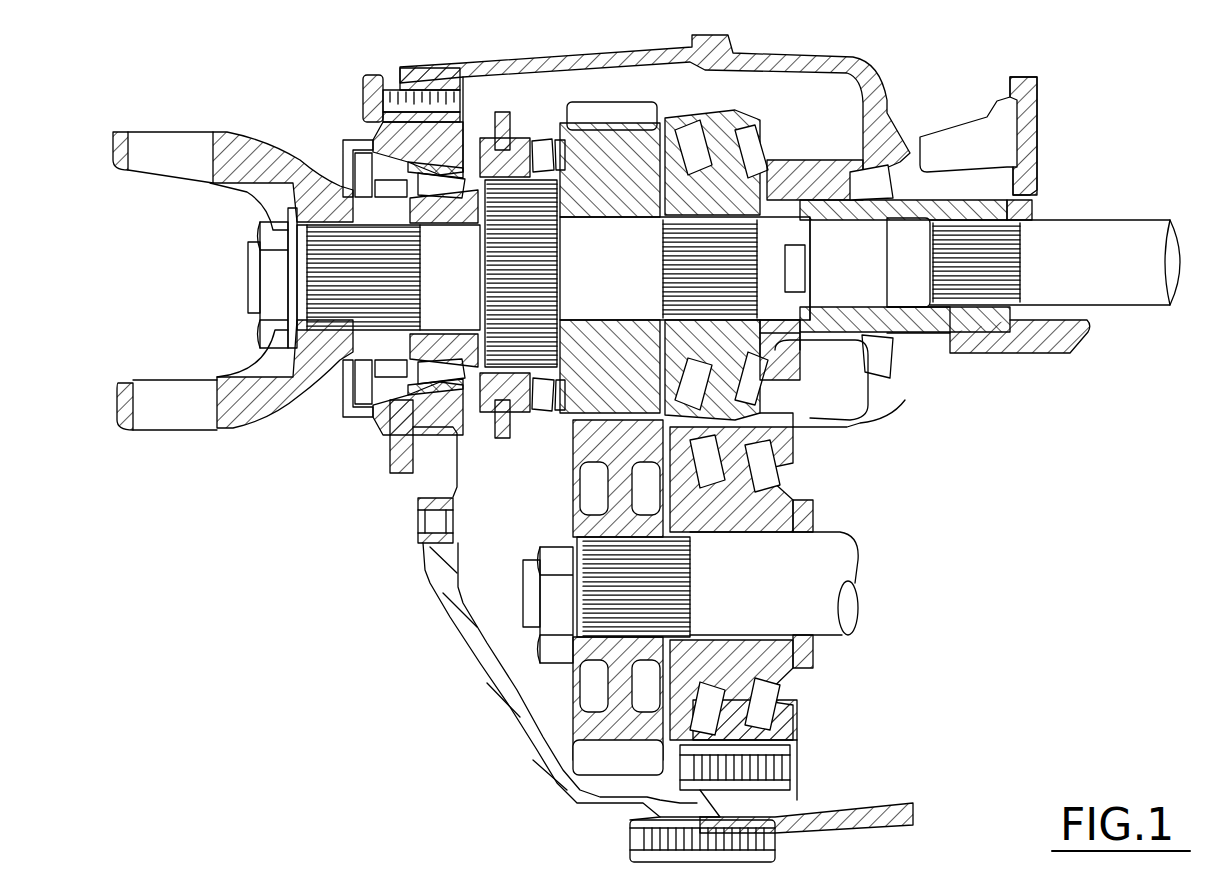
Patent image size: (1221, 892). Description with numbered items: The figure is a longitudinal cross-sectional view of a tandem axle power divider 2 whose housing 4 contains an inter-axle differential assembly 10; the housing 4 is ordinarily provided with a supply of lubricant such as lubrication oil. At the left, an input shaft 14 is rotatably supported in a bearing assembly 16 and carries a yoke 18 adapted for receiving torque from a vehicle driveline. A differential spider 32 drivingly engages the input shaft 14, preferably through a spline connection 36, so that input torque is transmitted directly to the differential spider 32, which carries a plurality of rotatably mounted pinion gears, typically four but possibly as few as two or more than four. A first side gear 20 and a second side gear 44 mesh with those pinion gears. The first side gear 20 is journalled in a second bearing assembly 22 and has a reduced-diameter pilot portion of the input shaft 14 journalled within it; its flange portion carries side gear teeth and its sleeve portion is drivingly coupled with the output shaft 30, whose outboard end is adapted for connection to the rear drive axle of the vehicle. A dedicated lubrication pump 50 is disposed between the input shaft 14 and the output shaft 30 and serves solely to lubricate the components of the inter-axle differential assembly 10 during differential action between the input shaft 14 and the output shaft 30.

The tandem axle power divider 2 is at (975, 75).
The housing 4 is at (447, 593).
The inter-axle differential assembly 10 is at (800, 125).
The input shaft 14 is at (466, 278).
The bearing assembly 16 is at (390, 440).
The yoke 18 is at (257, 135).
The first side gear 20 is at (803, 357).
The second bearing assembly 22 is at (880, 150).
The output shaft 30 is at (1112, 275).
The differential spider 32 is at (717, 133).
The spline connection 36 is at (660, 258).
The second side gear 44 is at (600, 100).
The lubrication pump 50 is at (870, 292).